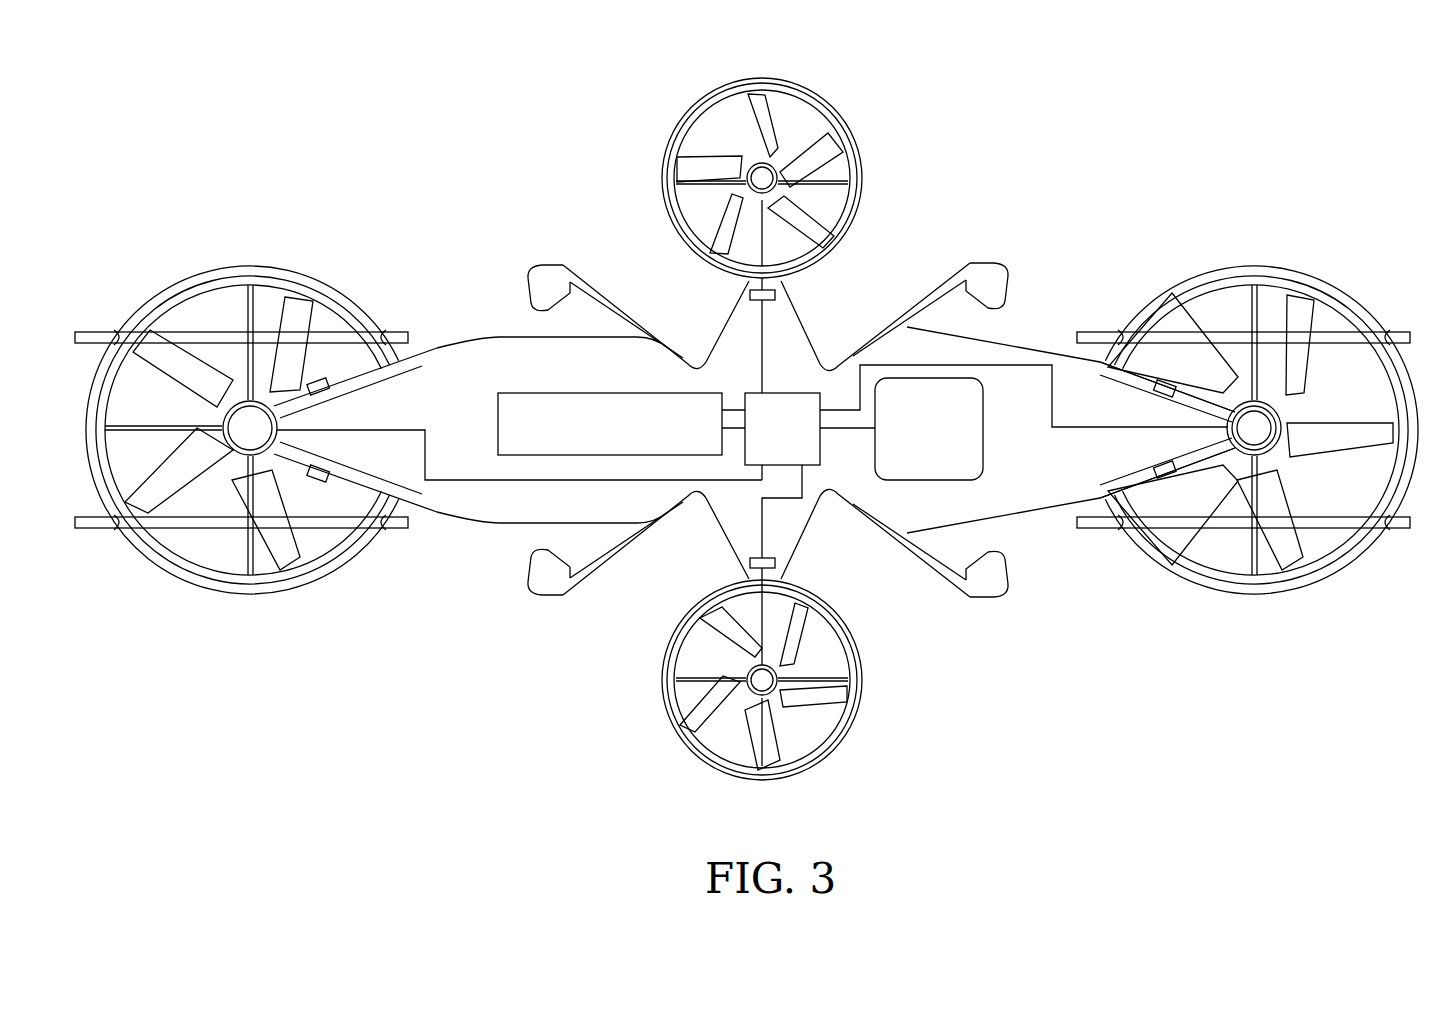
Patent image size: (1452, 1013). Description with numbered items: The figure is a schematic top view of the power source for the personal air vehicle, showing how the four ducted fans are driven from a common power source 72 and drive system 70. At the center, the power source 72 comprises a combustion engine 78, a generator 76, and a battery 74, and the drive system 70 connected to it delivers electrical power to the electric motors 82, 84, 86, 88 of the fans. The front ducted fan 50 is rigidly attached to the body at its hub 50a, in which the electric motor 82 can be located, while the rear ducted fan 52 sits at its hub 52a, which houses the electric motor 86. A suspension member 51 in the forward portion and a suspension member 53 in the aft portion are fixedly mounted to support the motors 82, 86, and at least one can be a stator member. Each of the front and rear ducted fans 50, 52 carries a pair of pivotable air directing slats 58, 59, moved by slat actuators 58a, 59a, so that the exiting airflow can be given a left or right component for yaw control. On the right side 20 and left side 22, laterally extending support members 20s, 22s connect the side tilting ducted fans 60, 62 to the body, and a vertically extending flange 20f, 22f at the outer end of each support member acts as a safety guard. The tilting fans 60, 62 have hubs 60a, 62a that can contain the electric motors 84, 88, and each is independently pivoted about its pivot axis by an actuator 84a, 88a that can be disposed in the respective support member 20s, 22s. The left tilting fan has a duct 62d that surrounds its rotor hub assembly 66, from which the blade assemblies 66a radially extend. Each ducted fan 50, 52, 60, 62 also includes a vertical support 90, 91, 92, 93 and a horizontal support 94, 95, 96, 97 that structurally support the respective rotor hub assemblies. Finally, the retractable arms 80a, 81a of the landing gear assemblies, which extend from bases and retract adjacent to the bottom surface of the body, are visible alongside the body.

The right side 20 is at (1042, 504).
The flange 20f is at (790, 578).
The laterally extending support member 20s is at (818, 515).
The left side 22 is at (1042, 356).
The flange 22f is at (790, 283).
The laterally extending support member 22s is at (812, 336).
The front ducted fan 50 is at (1305, 592).
The hub 50a is at (1280, 455).
The suspension member 51 is at (1160, 398).
The rear ducted fan 52 is at (195, 592).
The hub 52a is at (243, 398).
The suspension member 53 is at (340, 390).
The air directing slat 58 is at (1405, 338).
The slat actuator 58a is at (1122, 331).
The air directing slat 59 is at (405, 528).
The slat actuator 59a is at (125, 331).
The side tilting ducted fan 60 is at (660, 712).
The hub 60a is at (846, 630).
The side tilting ducted fan 62 is at (664, 138).
The hub 62a is at (842, 226).
The duct 62d is at (722, 98).
The rotor hub assembly 66 is at (786, 134).
The blade assemblies 66a is at (836, 150).
The drive system 70 is at (505, 352).
The power source 72 is at (598, 484).
The battery 74 is at (983, 455).
The generator 76 is at (780, 392).
The combustion engine 78 is at (498, 407).
The retractable arms 80a is at (988, 263).
The retractable arms 81a is at (563, 265).
The electric motor 82 is at (1275, 425).
The electric motor 84 is at (758, 676).
The actuator 84a is at (742, 563).
The electric motor 86 is at (290, 420).
The electric motor 88 is at (758, 183).
The actuator 88a is at (742, 292).
The vertical support 90 is at (1400, 430).
The vertical support 91 is at (855, 670).
The vertical support 92 is at (128, 428).
The vertical support 93 is at (855, 182).
The horizontal support 94 is at (1255, 268).
The horizontal support 95 is at (750, 762).
The horizontal support 96 is at (240, 592).
The horizontal support 97 is at (762, 79).